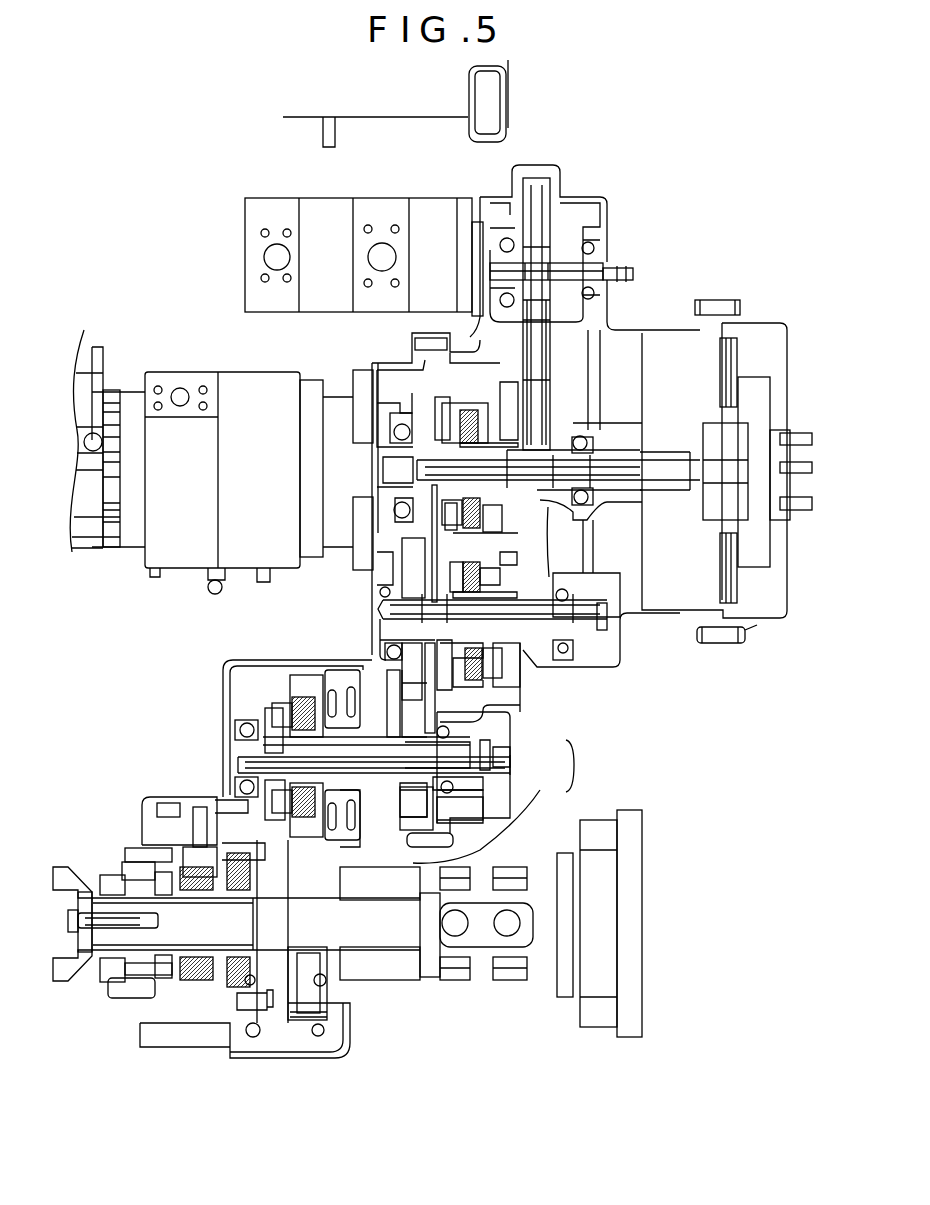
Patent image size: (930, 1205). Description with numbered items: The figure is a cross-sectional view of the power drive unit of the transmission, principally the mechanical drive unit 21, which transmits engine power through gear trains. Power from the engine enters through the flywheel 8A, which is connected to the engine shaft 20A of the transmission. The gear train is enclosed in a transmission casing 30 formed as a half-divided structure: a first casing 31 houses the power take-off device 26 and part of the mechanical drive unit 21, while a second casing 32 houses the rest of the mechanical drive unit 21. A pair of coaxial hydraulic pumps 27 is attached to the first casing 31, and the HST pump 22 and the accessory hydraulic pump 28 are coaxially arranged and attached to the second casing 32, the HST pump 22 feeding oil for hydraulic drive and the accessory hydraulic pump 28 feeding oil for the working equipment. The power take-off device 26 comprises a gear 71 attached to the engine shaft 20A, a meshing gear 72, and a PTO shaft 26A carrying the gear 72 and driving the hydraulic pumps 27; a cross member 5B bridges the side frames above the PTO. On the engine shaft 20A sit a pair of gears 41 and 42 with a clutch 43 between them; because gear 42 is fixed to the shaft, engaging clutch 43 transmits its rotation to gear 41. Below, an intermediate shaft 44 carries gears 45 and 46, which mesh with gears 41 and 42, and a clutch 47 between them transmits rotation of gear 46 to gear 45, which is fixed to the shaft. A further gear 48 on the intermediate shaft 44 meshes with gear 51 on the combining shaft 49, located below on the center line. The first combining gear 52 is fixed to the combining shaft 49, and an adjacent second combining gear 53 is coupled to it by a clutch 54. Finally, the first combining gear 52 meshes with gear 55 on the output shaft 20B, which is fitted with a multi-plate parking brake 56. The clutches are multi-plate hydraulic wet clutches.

The cross member 5B is at (469, 82).
The hydraulic pump 27 is at (433, 215).
The power take-off device 26 is at (632, 241).
The PTO shaft 26A is at (612, 285).
The gear 72 is at (551, 385).
The gear 71 is at (548, 412).
The flywheel 8A is at (782, 340).
The mechanical drive unit 21 is at (663, 692).
The accessory hydraulic pump 28 is at (88, 337).
The HST pump 22 is at (256, 390).
The gear 41 is at (510, 382).
The gear 42 is at (442, 397).
The clutch 43 is at (478, 397).
The engine shaft 20A is at (672, 480).
The clutch 47 is at (373, 582).
The gear 46 is at (373, 660).
The gear 48 is at (405, 685).
The intermediate shaft 44 is at (540, 650).
The gear 45 is at (532, 693).
The first casing 31 is at (520, 705).
The second casing 32 is at (540, 790).
The transmission casing 30 is at (585, 766).
The gear 51 is at (405, 713).
The combining shaft 49 is at (380, 773).
The first combining gear 52 is at (287, 690).
The second combining gear 53 is at (323, 660).
The clutch 54 is at (277, 710).
The output shaft 20B is at (395, 937).
The parking brake 56 is at (225, 977).
The gear 55 is at (333, 1003).